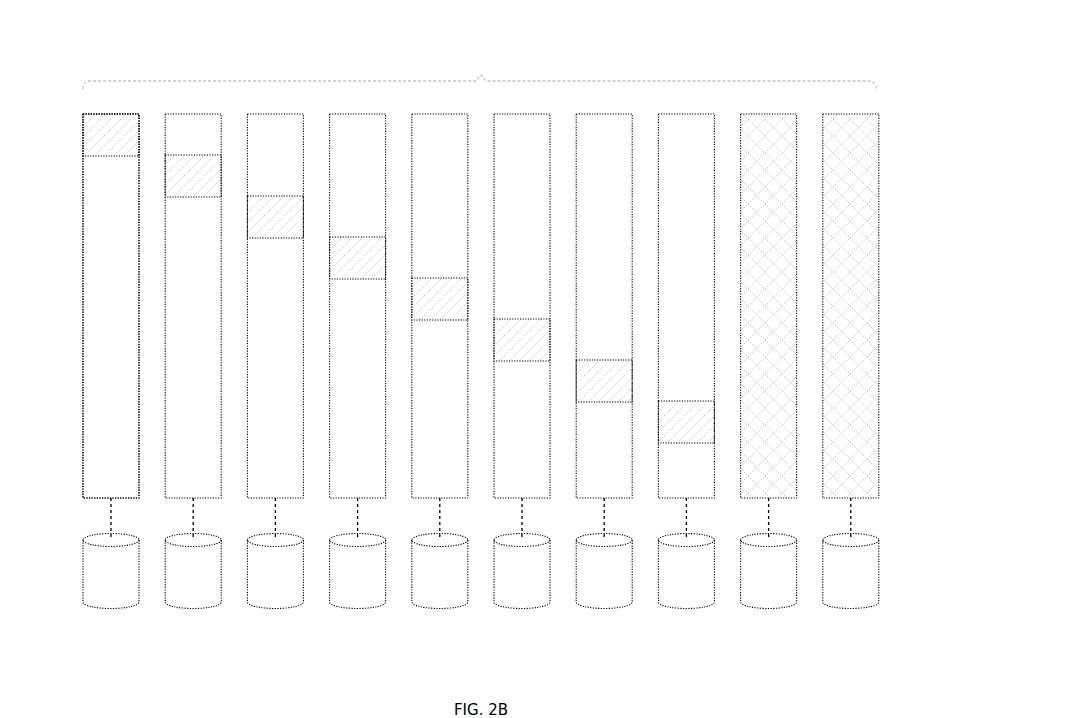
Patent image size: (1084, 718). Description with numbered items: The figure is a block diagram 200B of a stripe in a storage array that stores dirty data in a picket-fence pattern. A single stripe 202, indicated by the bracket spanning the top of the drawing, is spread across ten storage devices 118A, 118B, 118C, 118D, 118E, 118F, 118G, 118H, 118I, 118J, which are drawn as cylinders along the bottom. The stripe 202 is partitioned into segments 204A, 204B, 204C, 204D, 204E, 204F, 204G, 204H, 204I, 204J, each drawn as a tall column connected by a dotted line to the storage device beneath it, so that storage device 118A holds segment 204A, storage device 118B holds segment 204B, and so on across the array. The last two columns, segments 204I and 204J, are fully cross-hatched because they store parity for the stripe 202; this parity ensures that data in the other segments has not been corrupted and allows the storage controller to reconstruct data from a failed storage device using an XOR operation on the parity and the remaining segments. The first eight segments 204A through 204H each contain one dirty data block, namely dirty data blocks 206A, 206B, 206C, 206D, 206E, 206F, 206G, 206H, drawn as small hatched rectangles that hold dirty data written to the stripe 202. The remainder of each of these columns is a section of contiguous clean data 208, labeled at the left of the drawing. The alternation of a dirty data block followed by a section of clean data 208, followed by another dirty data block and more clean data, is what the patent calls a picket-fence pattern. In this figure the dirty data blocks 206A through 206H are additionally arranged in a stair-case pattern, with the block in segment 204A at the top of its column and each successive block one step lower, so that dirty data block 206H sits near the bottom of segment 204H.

The block diagram 200B is at (920, 58).
The stripe 202 is at (480, 69).
The clean data 208 is at (103, 388).
The segment 204A is at (92, 492).
The segment 204B is at (174, 492).
The segment 204C is at (256, 492).
The segment 204D is at (377, 492).
The segment 204E is at (459, 492).
The segment 204F is at (503, 492).
The segment 204G is at (585, 492).
The segment 204H is at (667, 492).
The segment 204I is at (788, 492).
The segment 204J is at (870, 492).
The dirty data block 206A is at (92, 150).
The dirty data block 206B is at (174, 190).
The dirty data block 206C is at (256, 232).
The dirty data block 206D is at (377, 272).
The dirty data block 206E is at (459, 314).
The dirty data block 206F is at (503, 354).
The dirty data block 206G is at (585, 396).
The dirty data block 206H is at (667, 436).
The storage device 118A is at (92, 582).
The storage device 118B is at (174, 582).
The storage device 118C is at (256, 582).
The storage device 118D is at (377, 582).
The storage device 118E is at (459, 582).
The storage device 118F is at (503, 582).
The storage device 118G is at (585, 582).
The storage device 118H is at (667, 582).
The storage device 118I is at (788, 582).
The storage device 118J is at (870, 582).